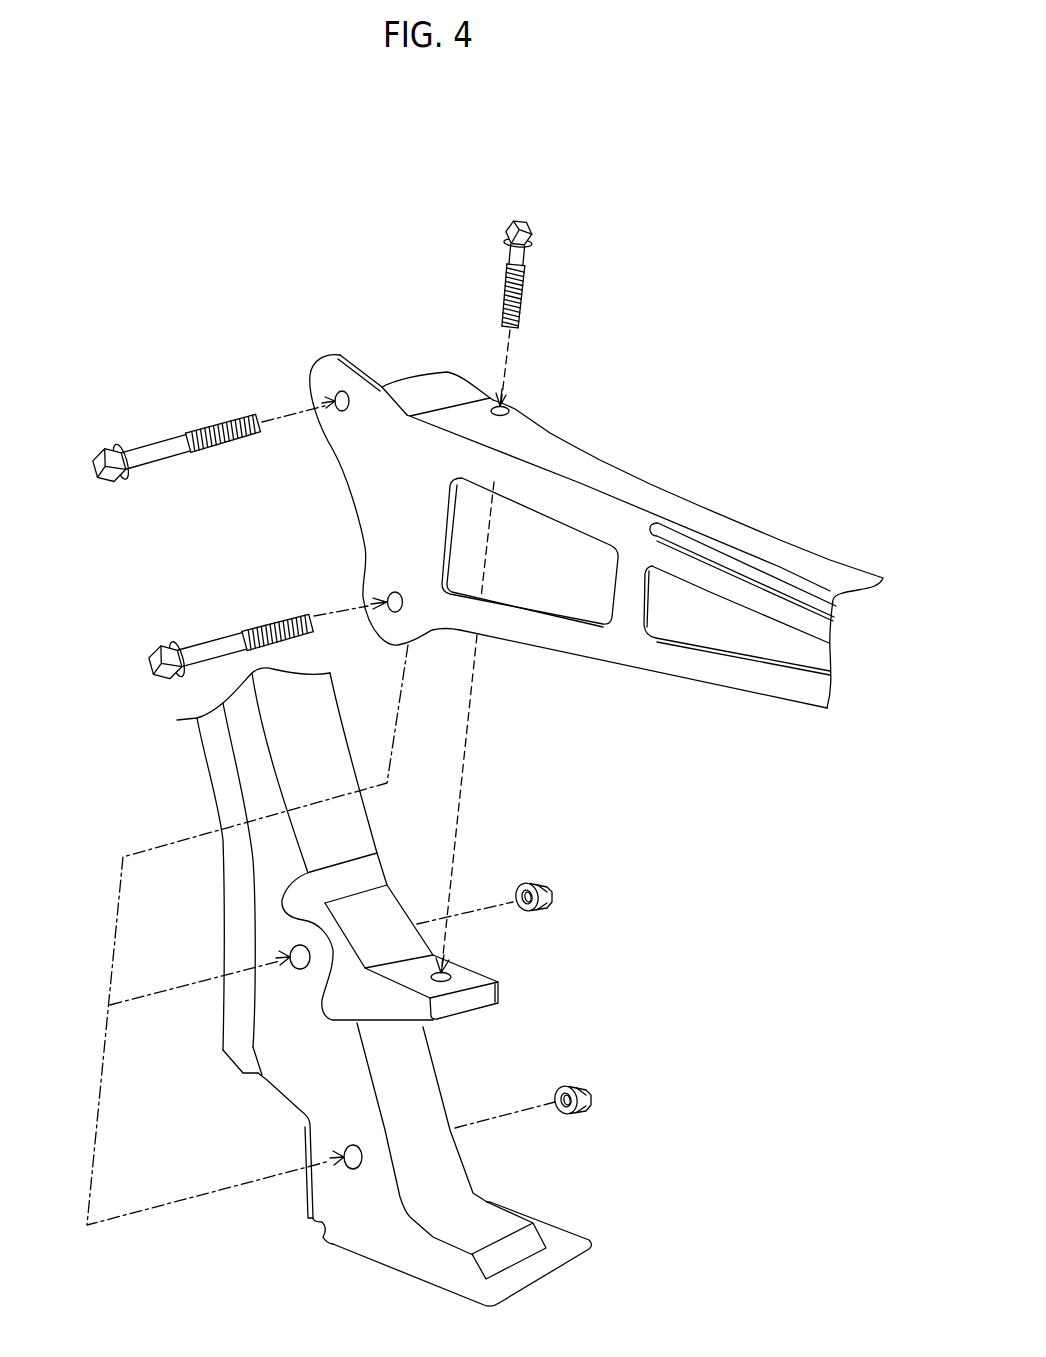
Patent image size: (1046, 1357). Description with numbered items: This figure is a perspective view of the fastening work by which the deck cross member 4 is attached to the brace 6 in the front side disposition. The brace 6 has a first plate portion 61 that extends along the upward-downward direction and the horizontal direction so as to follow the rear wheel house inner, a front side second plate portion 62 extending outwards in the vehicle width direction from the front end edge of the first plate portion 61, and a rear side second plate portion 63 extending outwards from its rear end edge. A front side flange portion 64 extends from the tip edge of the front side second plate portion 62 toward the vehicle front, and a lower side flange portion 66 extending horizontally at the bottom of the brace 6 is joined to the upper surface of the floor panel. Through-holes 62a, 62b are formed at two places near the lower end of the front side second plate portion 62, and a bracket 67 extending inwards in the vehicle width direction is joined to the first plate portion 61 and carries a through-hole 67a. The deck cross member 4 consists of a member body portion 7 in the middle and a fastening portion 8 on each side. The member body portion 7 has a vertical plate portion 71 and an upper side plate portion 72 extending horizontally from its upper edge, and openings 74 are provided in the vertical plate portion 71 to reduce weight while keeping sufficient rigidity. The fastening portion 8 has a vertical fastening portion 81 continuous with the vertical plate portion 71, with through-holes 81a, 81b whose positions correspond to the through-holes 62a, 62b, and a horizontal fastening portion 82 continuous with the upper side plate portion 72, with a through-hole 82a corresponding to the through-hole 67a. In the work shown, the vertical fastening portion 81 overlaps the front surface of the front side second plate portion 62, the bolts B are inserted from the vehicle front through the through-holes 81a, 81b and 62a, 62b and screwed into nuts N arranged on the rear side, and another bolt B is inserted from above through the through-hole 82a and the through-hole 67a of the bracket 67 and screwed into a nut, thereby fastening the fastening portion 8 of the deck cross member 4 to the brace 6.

The deck cross member 4 is at (743, 523).
The brace 6 is at (343, 722).
The member body portion 7 is at (753, 670).
The fastening portion 8 is at (384, 497).
The first plate portion 61 is at (333, 836).
The front side second plate portion 62 is at (290, 1043).
The through-hole 62a is at (290, 954).
The through-hole 62b is at (342, 1153).
The rear side second plate portion 63 is at (348, 752).
The front side flange portion 64 is at (230, 776).
The lower side flange portion 66 is at (447, 1277).
The bracket 67 is at (498, 993).
The through-hole 67a is at (450, 972).
The vertical plate portion 71 is at (617, 643).
The upper side plate portion 72 is at (656, 502).
The opening 74 is at (618, 588).
The vertical fastening portion 81 is at (368, 460).
The through-hole 81a is at (338, 396).
The through-hole 81b is at (388, 597).
The horizontal fastening portion 82 is at (453, 417).
The through-hole 82a is at (504, 409).
The bolt B is at (522, 222).
The nut N is at (553, 890).